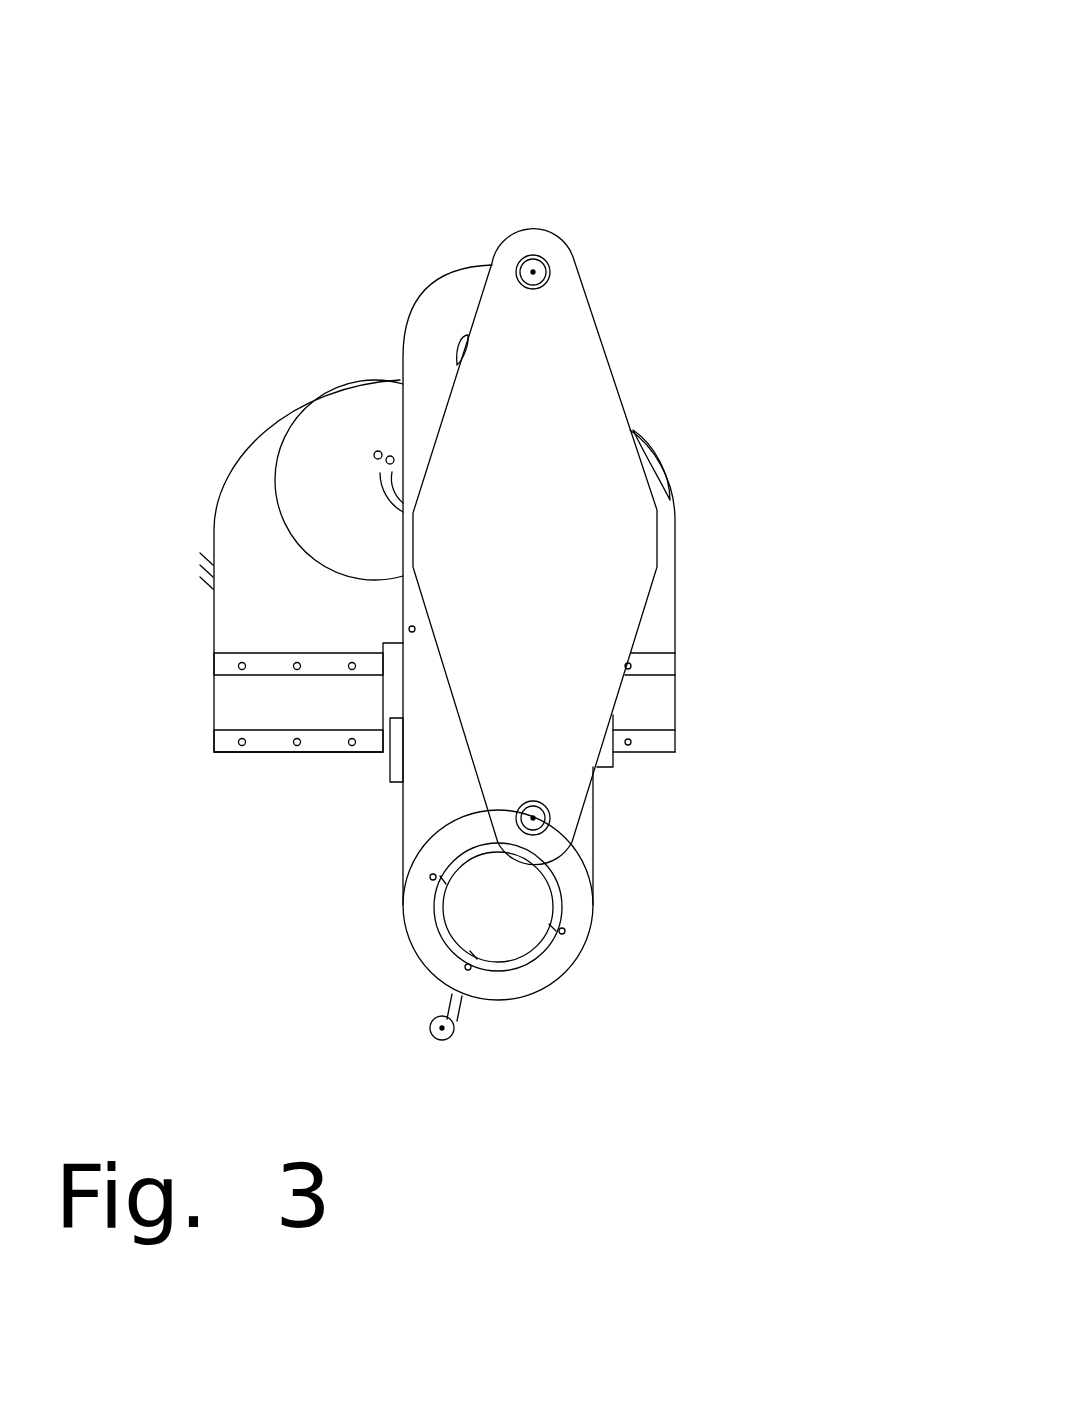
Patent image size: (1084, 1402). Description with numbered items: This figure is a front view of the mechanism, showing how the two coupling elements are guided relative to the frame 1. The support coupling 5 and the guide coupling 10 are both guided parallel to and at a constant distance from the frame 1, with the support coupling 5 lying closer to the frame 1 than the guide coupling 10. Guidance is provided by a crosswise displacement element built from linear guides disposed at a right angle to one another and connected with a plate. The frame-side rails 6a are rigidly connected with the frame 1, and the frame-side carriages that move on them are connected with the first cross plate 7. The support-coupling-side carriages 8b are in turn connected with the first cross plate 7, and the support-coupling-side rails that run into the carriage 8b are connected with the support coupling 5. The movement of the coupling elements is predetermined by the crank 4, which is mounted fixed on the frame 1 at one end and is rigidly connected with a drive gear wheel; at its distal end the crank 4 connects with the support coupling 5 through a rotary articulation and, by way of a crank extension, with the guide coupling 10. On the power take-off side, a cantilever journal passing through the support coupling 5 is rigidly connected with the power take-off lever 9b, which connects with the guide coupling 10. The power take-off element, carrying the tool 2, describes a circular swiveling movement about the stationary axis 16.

The frame 1 is at (300, 447).
The crank 4 is at (377, 420).
The support coupling 5 is at (437, 333).
The guide coupling 10 is at (562, 347).
The first cross plate 7 is at (387, 657).
The rail on the frame side 6a is at (265, 667).
The carriage on the support coupling side 8b is at (390, 752).
The power take-off lever 9b is at (578, 897).
The tool 2 is at (452, 1007).
The stationary axis 16 is at (442, 1028).